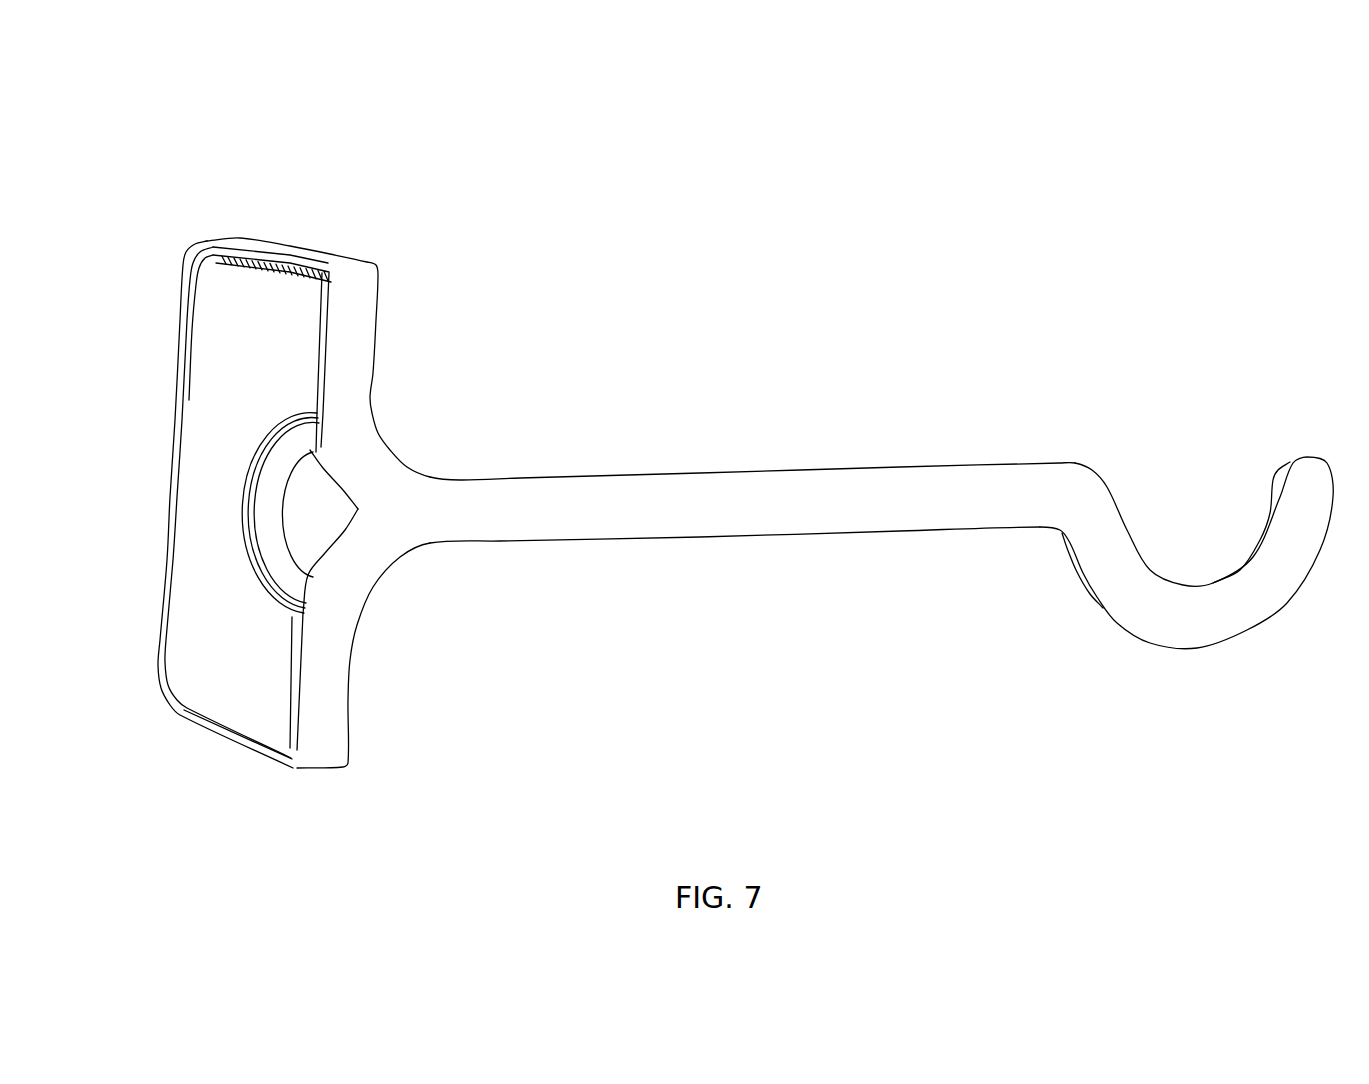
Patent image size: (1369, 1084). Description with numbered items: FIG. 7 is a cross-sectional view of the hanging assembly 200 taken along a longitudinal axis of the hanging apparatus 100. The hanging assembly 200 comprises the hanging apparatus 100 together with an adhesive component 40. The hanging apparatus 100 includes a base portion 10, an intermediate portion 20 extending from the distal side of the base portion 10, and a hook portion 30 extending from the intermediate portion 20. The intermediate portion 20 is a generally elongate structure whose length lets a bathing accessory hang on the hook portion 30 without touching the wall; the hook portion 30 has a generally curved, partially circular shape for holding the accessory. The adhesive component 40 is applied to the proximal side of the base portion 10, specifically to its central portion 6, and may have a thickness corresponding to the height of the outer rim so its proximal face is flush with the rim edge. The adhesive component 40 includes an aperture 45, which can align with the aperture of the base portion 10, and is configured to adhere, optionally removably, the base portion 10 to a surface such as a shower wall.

The hanging apparatus 100 is at (1039, 276).
The hanging assembly 200 is at (786, 176).
The base portion 10 is at (415, 742).
The intermediate portion 20 is at (766, 365).
The hook portion 30 is at (1278, 386).
The adhesive component 40 is at (222, 250).
The aperture 45 is at (265, 588).
The central portion 6 is at (283, 480).